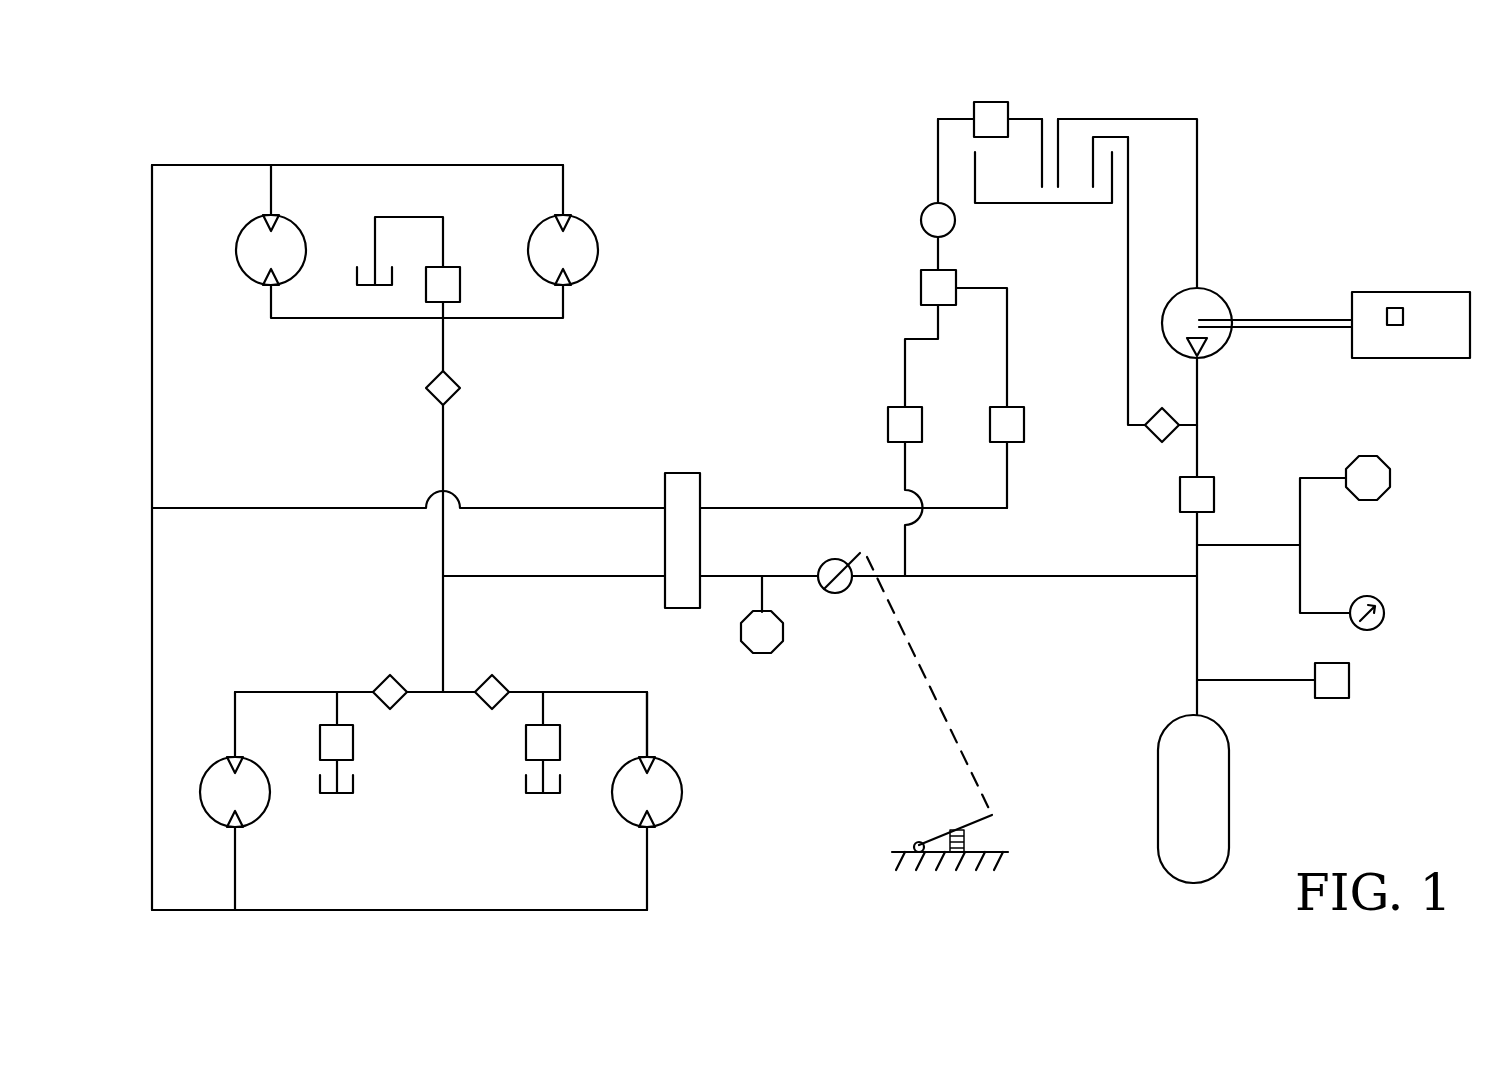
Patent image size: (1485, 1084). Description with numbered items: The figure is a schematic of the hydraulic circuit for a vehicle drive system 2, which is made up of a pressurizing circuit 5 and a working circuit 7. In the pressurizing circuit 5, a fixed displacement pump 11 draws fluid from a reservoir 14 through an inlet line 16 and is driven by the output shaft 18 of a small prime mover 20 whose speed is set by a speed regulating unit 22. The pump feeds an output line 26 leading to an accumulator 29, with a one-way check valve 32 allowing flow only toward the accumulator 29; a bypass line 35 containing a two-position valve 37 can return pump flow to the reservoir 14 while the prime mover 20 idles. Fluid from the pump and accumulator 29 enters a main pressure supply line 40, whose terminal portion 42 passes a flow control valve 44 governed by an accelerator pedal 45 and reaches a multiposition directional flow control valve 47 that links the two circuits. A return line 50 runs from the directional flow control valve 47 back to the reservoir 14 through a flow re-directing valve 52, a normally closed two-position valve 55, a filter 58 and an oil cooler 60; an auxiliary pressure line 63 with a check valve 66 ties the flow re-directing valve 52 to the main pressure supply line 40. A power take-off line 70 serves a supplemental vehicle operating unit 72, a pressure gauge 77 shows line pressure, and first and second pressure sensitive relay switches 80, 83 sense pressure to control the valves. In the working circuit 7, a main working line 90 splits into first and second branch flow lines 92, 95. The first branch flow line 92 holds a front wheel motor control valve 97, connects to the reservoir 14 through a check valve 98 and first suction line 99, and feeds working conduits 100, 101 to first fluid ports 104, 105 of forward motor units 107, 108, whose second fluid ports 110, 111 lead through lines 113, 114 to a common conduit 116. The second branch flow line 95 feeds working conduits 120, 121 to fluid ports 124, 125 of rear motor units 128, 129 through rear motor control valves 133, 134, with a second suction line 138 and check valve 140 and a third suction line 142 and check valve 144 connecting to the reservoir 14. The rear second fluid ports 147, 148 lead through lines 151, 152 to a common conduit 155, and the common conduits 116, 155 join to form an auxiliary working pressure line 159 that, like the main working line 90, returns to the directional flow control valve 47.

The drive system 2 is at (1300, 160).
The pressurizing circuit 5 is at (890, 278).
The working circuit 7 is at (505, 163).
The fixed displacement pump 11 is at (1218, 295).
The reservoir 14 is at (370, 282).
The inlet line 16 is at (1198, 160).
The output shaft 18 is at (1278, 330).
The prime mover 20 is at (1428, 292).
The speed regulating unit 22 is at (1398, 325).
The output line 26 is at (1200, 440).
The accumulator 29 is at (1215, 808).
The one-way check valve 32 is at (1210, 495).
The bypass line 35 is at (1128, 353).
The two-position valve 37 is at (1152, 445).
The main pressure supply line 40 is at (938, 580).
The terminal portion 42 is at (718, 576).
The flow control valve 44 is at (825, 590).
The accelerator pedal 45 is at (1003, 810).
The directional flow control valve 47 is at (702, 490).
The return line 50 is at (870, 507).
The flow re-directing valve 52 is at (950, 278).
The two-position valve 55 is at (1022, 428).
The filter 58 is at (925, 215).
The oil cooler 60 is at (995, 105).
The auxiliary pressure line 63 is at (905, 350).
The check valve 66 is at (895, 420).
The power take-off line 70 is at (1240, 690).
The supplemental vehicle operating unit 72 is at (1330, 690).
The pressure gauge 77 is at (1385, 613).
The first pressure sensitive relay switch 80 is at (1380, 480).
The second pressure sensitive relay switch 83 is at (765, 650).
The main working line 90 is at (555, 578).
The first branch flow line 92 is at (450, 338).
The second branch flow line 95 is at (447, 635).
The front wheel motor control valve 97 is at (462, 392).
The check valve 98 is at (460, 283).
The first suction line 99 is at (445, 238).
The working conduit 100 is at (308, 320).
The working conduit 101 is at (540, 320).
The first fluid port 104 is at (262, 278).
The first fluid port 105 is at (575, 283).
The forward motor unit 107 is at (306, 248).
The forward motor unit 108 is at (598, 258).
The second fluid port 110 is at (255, 225).
The second fluid port 111 is at (573, 215).
The line 113 is at (275, 185).
The line 114 is at (565, 178).
The common conduit 116 is at (400, 165).
The working conduit 120 is at (415, 695).
The working conduit 121 is at (540, 690).
The first fluid port 124 is at (228, 760).
The second fluid port 125 is at (655, 760).
The rear motor unit 128 is at (268, 810).
The rear motor unit 129 is at (683, 788).
The rear motor control valve 133 is at (375, 685).
The second rear motor control valve 134 is at (500, 682).
The second suction line 138 is at (355, 768).
The check valve 140 is at (320, 742).
The third suction line 142 is at (545, 705).
The check valve 144 is at (525, 740).
The second fluid port 147 is at (232, 822).
The second fluid port 148 is at (660, 820).
The line 151 is at (238, 865).
The line 152 is at (650, 885).
The common conduit 155 is at (340, 910).
The auxiliary working pressure line 159 is at (255, 510).